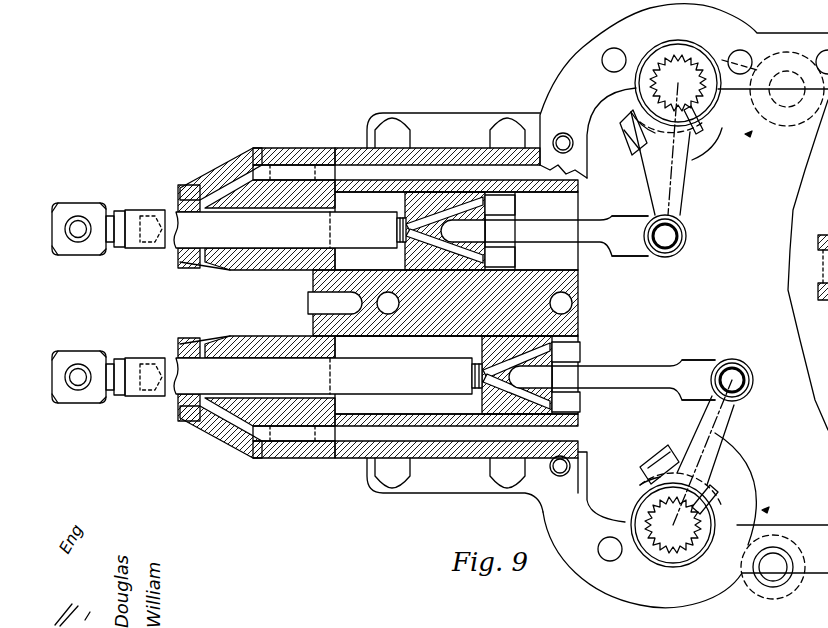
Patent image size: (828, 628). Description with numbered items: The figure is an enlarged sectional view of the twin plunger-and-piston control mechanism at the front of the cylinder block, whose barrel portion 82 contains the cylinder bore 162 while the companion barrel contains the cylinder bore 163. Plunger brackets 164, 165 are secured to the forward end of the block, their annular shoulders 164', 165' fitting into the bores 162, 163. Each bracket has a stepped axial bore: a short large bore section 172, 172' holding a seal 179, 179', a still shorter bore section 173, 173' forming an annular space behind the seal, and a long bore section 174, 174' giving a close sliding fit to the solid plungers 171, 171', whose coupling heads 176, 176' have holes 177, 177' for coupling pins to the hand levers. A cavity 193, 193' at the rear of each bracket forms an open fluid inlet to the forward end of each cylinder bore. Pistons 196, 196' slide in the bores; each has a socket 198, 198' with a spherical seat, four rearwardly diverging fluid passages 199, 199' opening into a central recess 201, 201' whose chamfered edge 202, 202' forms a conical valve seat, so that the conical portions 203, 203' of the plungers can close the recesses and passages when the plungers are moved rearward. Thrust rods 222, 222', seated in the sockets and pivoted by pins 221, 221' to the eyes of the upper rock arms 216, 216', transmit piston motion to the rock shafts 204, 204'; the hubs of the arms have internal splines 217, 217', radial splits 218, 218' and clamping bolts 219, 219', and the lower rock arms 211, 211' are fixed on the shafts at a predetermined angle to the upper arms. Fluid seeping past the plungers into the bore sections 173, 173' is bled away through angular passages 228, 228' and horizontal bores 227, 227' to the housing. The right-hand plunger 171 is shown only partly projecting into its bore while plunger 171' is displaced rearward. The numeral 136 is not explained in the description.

The barrel portion 82 is at (338, 460).
The shaft 136 is at (818, 268).
The cylinder bore 162 is at (560, 193).
The cylinder bore 163 is at (425, 397).
The plunger bracket 164 is at (257, 171).
The annular shoulder 164' is at (456, 192).
The plunger bracket 165 is at (257, 436).
The annular shoulder 165' is at (456, 411).
The plunger 171 is at (135, 218).
The plunger 171' is at (138, 361).
The bore section 172 is at (183, 236).
The bore section 172' is at (201, 367).
The bore section 173 is at (211, 268).
The bore section 173' is at (218, 333).
The bore section 174 is at (270, 262).
The bore section 174' is at (270, 339).
The coupling head 176 is at (79, 218).
The coupling head 176' is at (79, 385).
The hole 177 is at (76, 245).
The hole 177' is at (83, 357).
The seal 179 is at (175, 258).
The seal 179' is at (173, 378).
The cavity 193 is at (285, 240).
The cavity 193' is at (323, 369).
The piston 196 is at (521, 239).
The piston 196' is at (585, 390).
The socket 198 is at (544, 236).
The socket 198' is at (612, 380).
The fluid passages 199 is at (497, 231).
The fluid passages 199' is at (564, 377).
The central recess 201 is at (424, 230).
The central recess 201' is at (489, 376).
The chamfered edge 202 is at (430, 231).
The valve seat 202' is at (490, 375).
The conical portion 203 is at (385, 226).
The conical portion 203' is at (455, 373).
The rock shaft 204 is at (682, 76).
The rock shaft 204' is at (662, 535).
The lower rock arm 211 is at (773, 96).
The lower rock arm 211' is at (773, 560).
The upper rock arm 216 is at (679, 149).
The upper rock arm 216' is at (705, 452).
The internal splines 217 is at (672, 69).
The internal splines 217' is at (673, 545).
The radial split 218 is at (703, 133).
The radial split 218' is at (724, 489).
The clamping bolt 219 is at (624, 137).
The clamping bolt 219' is at (643, 455).
The pivot pin 221 is at (680, 236).
The pivot pin 221' is at (742, 373).
The thrust rod 222 is at (617, 229).
The thrust rod 222' is at (652, 373).
The horizontal bore 227 is at (437, 145).
The horizontal bore 227' is at (456, 464).
The angular passage 228 is at (294, 152).
The angular passage 228' is at (294, 455).